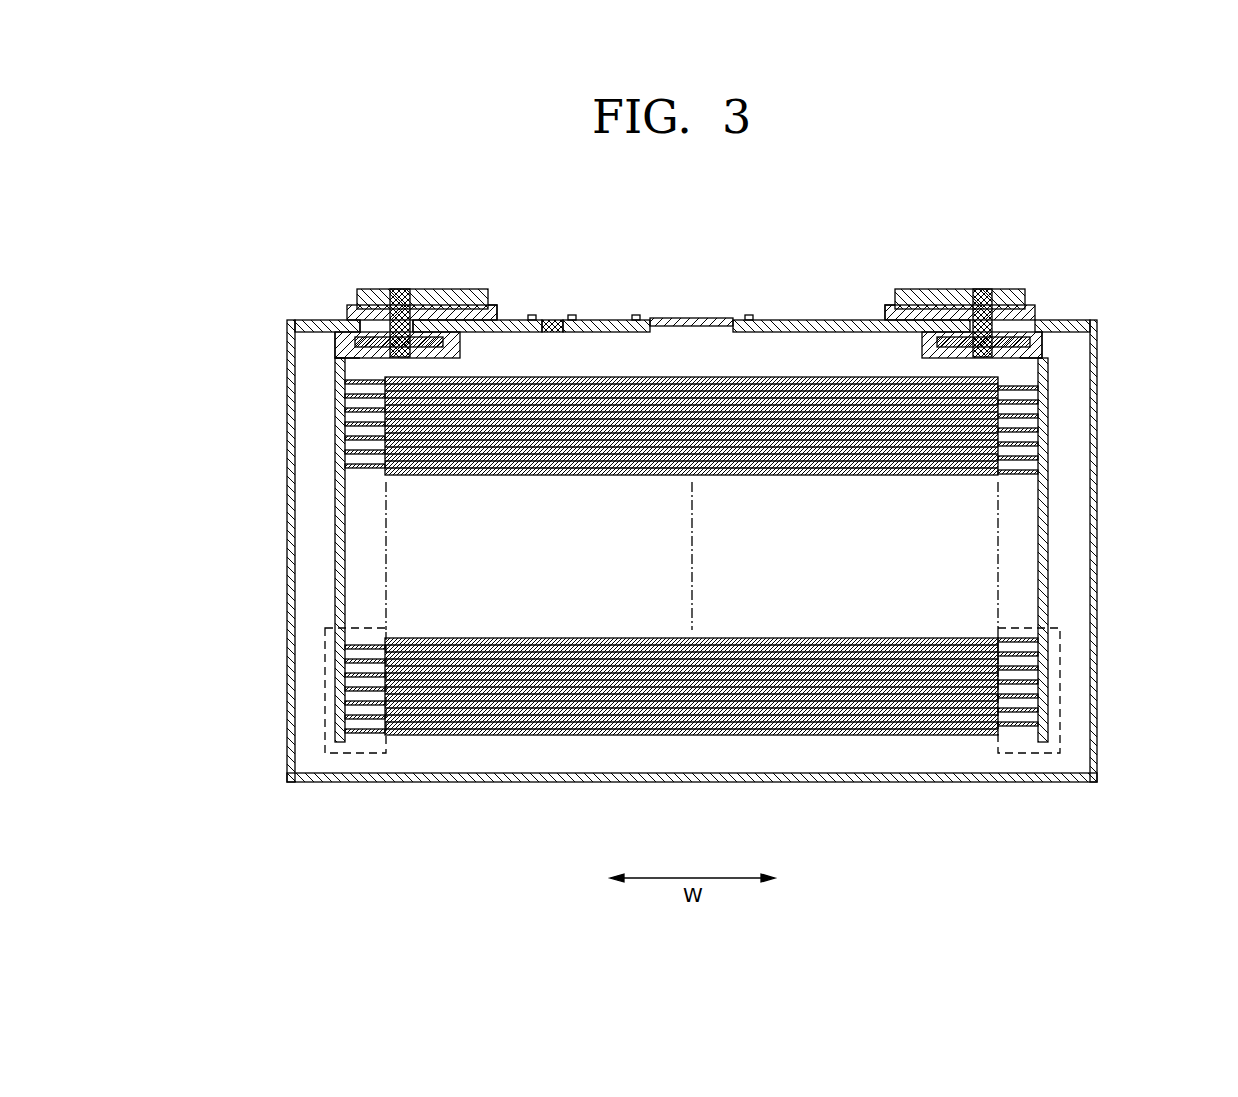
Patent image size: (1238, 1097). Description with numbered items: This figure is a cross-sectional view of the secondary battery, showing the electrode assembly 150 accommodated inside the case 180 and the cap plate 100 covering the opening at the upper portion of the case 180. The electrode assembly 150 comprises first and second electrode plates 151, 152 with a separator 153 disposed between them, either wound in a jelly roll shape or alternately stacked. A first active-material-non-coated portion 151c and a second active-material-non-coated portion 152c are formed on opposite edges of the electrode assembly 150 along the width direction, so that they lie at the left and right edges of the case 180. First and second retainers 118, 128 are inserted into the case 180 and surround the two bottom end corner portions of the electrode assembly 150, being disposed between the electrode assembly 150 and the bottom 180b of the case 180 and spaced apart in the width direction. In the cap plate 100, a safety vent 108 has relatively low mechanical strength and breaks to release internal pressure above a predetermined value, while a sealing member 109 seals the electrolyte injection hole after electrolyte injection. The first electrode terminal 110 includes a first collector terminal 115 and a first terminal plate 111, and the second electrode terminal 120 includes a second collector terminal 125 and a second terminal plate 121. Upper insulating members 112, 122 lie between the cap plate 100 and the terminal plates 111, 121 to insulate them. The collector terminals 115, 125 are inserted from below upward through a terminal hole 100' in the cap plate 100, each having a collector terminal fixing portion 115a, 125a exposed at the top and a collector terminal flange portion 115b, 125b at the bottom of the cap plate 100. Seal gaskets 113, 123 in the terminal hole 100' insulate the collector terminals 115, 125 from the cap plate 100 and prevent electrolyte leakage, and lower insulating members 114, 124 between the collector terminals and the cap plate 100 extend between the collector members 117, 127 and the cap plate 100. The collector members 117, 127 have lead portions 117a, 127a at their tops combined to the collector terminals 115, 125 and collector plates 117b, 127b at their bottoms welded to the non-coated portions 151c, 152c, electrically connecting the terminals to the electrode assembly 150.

The cap plate 100 is at (652, 299).
The terminal hole 100' is at (416, 291).
The safety vent 108 is at (715, 318).
The sealing member 109 is at (553, 318).
The first electrode terminal 110 is at (1003, 269).
The first terminal plate 111 is at (912, 290).
The upper insulating member 112 is at (888, 304).
The seal gasket 113 is at (978, 290).
The lower insulating member 114 is at (1093, 323).
The first collector terminal 115 is at (983, 269).
The collector terminal fixing portion 115a is at (990, 305).
The collector terminal flange portion 115b is at (1030, 333).
The collector member 117 is at (1087, 539).
The lead portion 117a is at (1048, 350).
The collector plate 117b is at (1048, 435).
The first retainer 118 is at (1060, 690).
The second electrode terminal 120 is at (383, 269).
The second terminal plate 121 is at (477, 290).
The upper insulating member 122 is at (498, 318).
The seal gasket 123 is at (402, 332).
The lower insulating member 124 is at (335, 336).
The second collector terminal 125 is at (403, 269).
The collector terminal fixing portion 125a is at (395, 305).
The collector terminal flange portion 125b is at (360, 333).
The collector member 127 is at (294, 539).
The lead portion 127a is at (345, 343).
The collector plate 127b is at (345, 437).
The second retainer 128 is at (325, 690).
The electrode assembly 150 is at (593, 547).
The first electrode plate 151 is at (755, 642).
The first active-material-non-coated portion 151c is at (1018, 642).
The second electrode plate 152 is at (447, 720).
The second active-material-non-coated portion 152c is at (360, 720).
The separator 153 is at (607, 736).
The case 180 is at (737, 580).
The bottom 180b is at (918, 776).